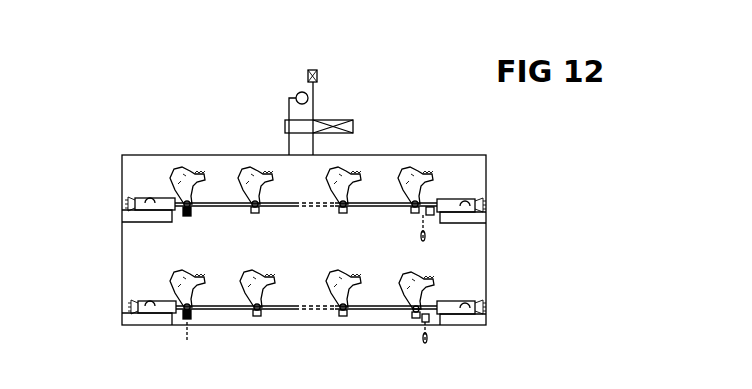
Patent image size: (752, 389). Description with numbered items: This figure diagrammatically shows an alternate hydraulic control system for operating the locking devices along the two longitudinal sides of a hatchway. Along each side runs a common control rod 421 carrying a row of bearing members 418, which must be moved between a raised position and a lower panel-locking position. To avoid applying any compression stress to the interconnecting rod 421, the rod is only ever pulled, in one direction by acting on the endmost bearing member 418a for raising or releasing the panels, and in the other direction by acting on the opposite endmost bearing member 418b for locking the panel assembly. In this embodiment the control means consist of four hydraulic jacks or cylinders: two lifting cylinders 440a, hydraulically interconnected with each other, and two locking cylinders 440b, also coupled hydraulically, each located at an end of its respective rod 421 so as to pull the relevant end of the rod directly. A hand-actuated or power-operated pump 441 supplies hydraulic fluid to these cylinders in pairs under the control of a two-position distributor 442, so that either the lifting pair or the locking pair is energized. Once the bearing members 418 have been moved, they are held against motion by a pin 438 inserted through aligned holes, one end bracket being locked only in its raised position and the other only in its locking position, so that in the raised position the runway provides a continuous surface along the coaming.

The bearing member 418 is at (267, 188).
The endmost bearing member 418a is at (177, 168).
The endmost bearing member 418b is at (421, 174).
The control rod 421 is at (228, 208).
The pin 438 is at (190, 319).
The lifting cylinder 440a is at (145, 210).
The locking cylinder 440b is at (470, 212).
The pump 441 is at (297, 93).
The two-position distributor 442 is at (317, 124).